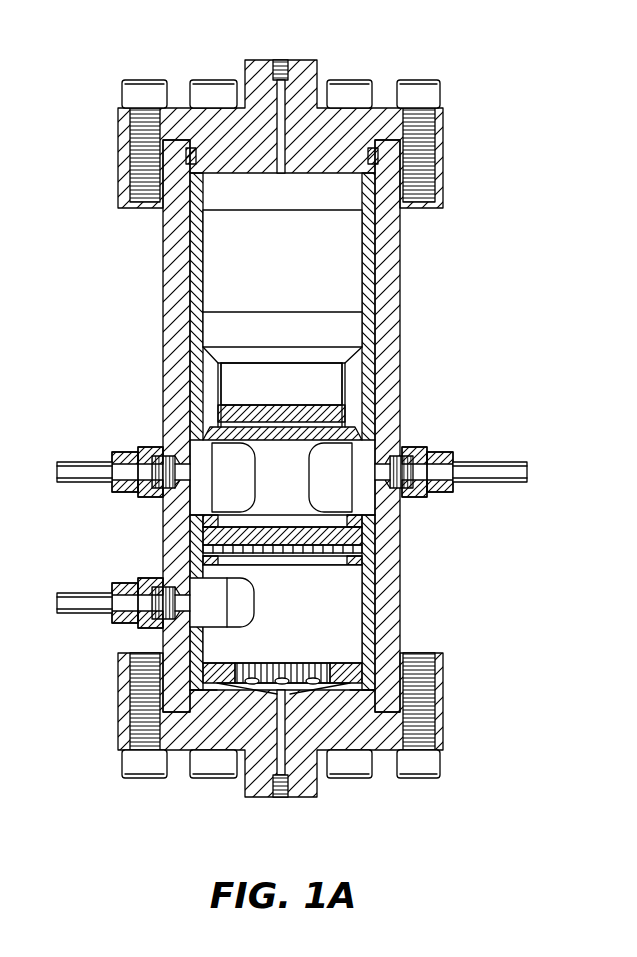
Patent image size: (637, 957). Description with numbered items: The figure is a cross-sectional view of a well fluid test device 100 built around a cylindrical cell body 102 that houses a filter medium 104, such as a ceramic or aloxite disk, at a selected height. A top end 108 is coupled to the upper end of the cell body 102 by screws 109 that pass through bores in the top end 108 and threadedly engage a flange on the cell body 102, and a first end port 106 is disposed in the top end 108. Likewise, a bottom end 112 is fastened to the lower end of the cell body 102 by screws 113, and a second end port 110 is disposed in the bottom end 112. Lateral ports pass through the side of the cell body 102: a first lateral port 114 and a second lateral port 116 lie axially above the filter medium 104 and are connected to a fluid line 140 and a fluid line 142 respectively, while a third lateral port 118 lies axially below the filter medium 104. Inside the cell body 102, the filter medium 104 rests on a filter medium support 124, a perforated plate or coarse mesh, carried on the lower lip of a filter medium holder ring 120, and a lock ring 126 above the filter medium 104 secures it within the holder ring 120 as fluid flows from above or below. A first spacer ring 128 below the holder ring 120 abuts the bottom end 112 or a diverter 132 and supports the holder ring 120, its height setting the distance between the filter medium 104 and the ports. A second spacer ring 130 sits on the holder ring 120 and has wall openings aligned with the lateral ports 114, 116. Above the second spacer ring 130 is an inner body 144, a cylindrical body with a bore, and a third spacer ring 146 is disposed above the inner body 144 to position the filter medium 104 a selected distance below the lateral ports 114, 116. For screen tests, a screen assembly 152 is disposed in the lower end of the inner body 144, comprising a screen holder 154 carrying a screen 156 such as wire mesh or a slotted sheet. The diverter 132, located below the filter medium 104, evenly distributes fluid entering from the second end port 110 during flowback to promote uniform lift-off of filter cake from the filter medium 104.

The well fluid test device 100 is at (410, 40).
The cell body 102 is at (170, 250).
The filter medium 104 is at (281, 537).
The first end port 106 is at (285, 61).
The top end 108 is at (258, 70).
The screws 109 is at (145, 79).
The second end port 110 is at (285, 797).
The bottom end 112 is at (258, 787).
The screws 113 is at (142, 778).
The first lateral port 114 is at (157, 455).
The second lateral port 116 is at (402, 455).
The third lateral port 118 is at (160, 620).
The filter medium holder ring 120 is at (365, 547).
The filter medium support 124 is at (205, 547).
The lock ring 126 is at (385, 517).
The first spacer ring 128 is at (347, 612).
The second spacer ring 130 is at (270, 472).
The diverter 132 is at (372, 673).
The fluid line 140 is at (85, 477).
The fluid line 142 is at (485, 462).
The inner body 144 is at (223, 267).
The third spacer ring 146 is at (165, 213).
The screen assembly 152 is at (355, 385).
The screen holder 154 is at (252, 379).
The screen 156 is at (257, 409).